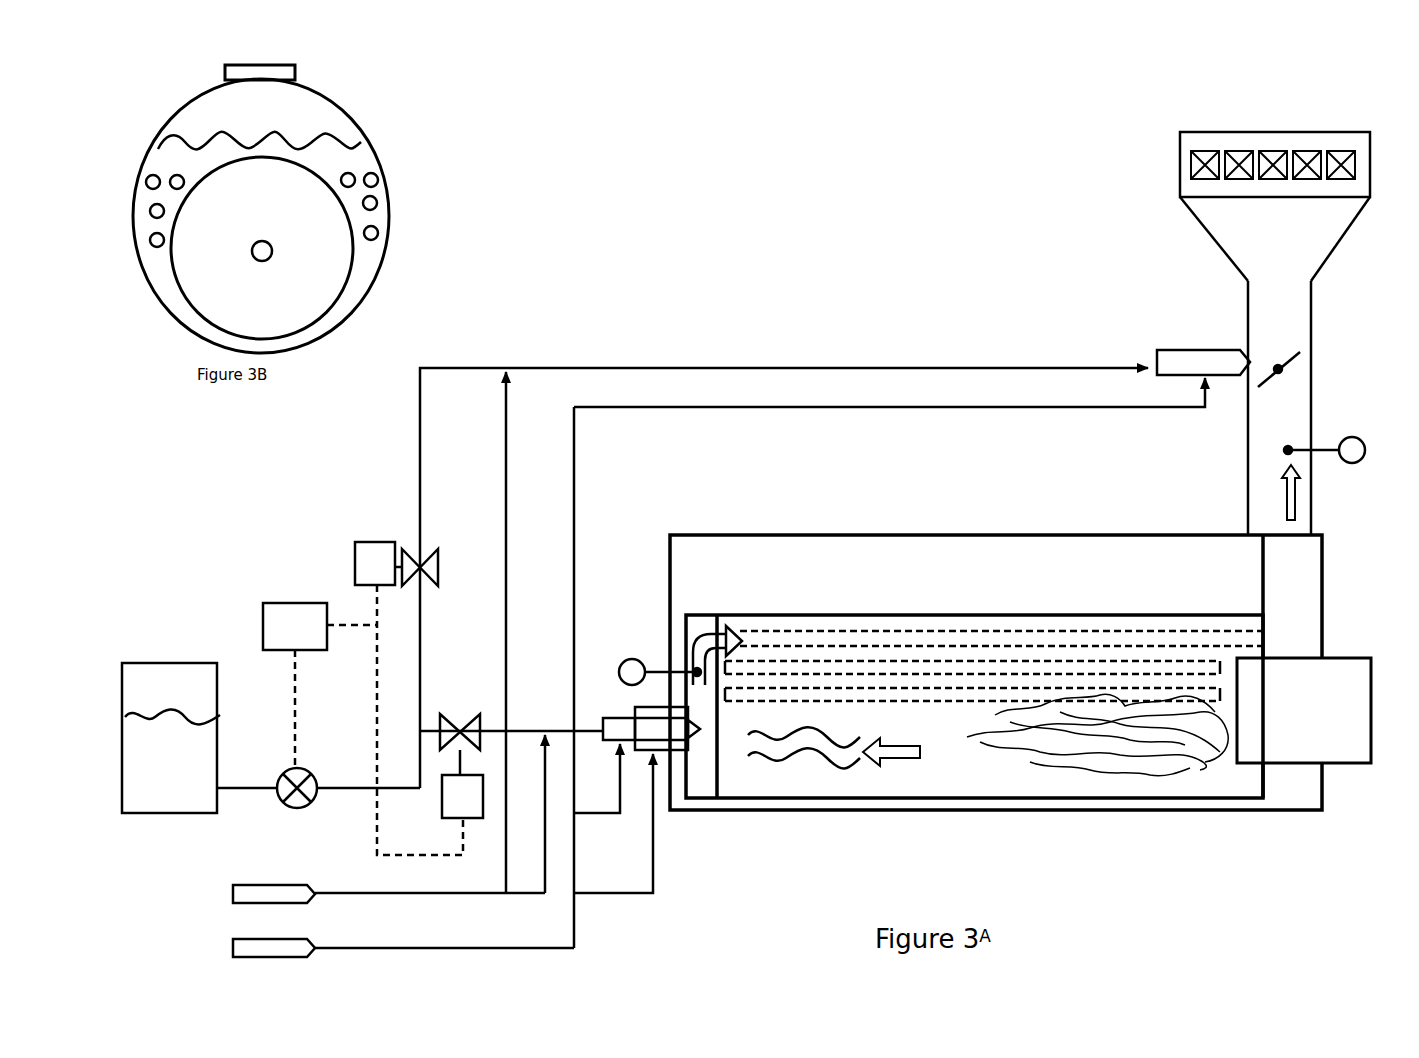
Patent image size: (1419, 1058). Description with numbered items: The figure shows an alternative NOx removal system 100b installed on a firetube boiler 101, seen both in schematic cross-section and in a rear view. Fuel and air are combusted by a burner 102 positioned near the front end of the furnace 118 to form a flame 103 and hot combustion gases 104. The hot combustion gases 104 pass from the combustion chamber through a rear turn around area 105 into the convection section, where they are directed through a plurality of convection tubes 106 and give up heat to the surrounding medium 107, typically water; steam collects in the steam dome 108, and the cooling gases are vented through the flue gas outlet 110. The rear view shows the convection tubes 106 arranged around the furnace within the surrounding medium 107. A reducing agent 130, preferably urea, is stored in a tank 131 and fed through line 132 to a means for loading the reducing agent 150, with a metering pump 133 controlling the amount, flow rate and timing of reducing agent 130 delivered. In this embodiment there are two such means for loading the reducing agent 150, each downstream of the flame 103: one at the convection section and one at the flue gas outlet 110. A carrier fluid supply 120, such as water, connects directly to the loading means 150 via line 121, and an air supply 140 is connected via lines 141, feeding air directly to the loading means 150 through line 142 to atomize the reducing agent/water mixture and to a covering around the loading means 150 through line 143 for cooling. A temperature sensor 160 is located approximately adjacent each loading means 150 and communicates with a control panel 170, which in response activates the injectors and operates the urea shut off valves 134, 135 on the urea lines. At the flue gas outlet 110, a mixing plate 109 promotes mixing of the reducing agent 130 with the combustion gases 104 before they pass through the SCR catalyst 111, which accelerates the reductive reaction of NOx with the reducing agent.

In FIG. 3A, the NOx removal system 100b is at (677, 97).
In FIG. 3A, the firetube boiler 101 is at (782, 533).
In FIG. 3A, the burner 102 is at (1338, 650).
In FIG. 3A, the flame 103 is at (1213, 778).
In FIG. 3A, the hot combustion gases 104 is at (848, 798).
In FIG. 3A, the rear turn around area 105 is at (708, 630).
In FIG. 3B, the convection tubes 106 is at (381, 221).
In FIG. 3B, the surrounding medium 107 is at (303, 132).
In FIG. 3A, the steam dome 108 is at (1165, 630).
In FIG. 3A, the mixing plate 109 is at (1294, 372).
In FIG. 3A, the flue gas outlet 110 is at (1410, 284).
In FIG. 3A, the SCR catalyst 111 is at (1153, 186).
In FIG. 3A, the furnace 118 is at (1220, 612).
In FIG. 3A, the carrier fluid supply 120 is at (211, 908).
In FIG. 3A, the line 121 is at (388, 890).
In FIG. 3A, the reducing agent 130 is at (193, 793).
In FIG. 3A, the tank 131 is at (220, 658).
In FIG. 3A, the line 132 is at (278, 778).
In FIG. 3A, the metering pump 133 is at (318, 848).
In FIG. 3A, the urea shut off valve 134 is at (400, 527).
In FIG. 3A, the urea shut off valve 135 is at (483, 714).
In FIG. 3A, the air supply 140 is at (211, 964).
In FIG. 3A, the lines 141 is at (426, 946).
In FIG. 3A, the line 142 is at (892, 614).
In FIG. 3A, the line 143 is at (657, 887).
In FIG. 3B, the means for loading the reducing agent 150 is at (292, 238).
In FIG. 3A, the means for loading the reducing agent 150 is at (1173, 346).
In FIG. 3A, the temperature sensor 160 is at (1403, 499).
In FIG. 3A, the control panel 170 is at (323, 598).